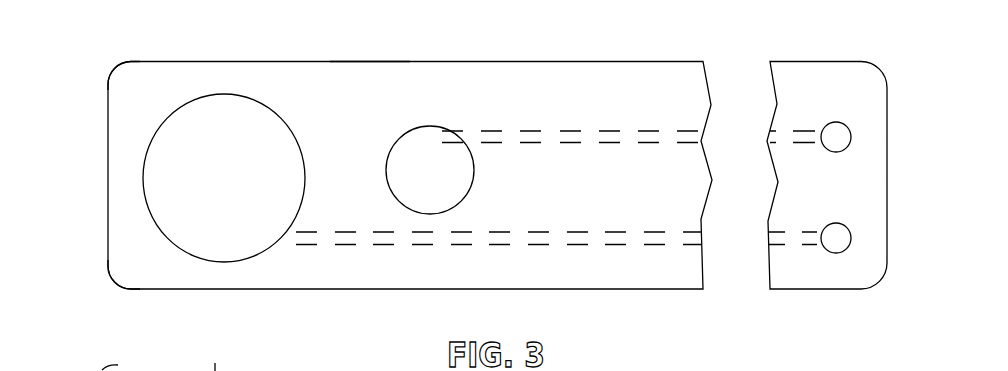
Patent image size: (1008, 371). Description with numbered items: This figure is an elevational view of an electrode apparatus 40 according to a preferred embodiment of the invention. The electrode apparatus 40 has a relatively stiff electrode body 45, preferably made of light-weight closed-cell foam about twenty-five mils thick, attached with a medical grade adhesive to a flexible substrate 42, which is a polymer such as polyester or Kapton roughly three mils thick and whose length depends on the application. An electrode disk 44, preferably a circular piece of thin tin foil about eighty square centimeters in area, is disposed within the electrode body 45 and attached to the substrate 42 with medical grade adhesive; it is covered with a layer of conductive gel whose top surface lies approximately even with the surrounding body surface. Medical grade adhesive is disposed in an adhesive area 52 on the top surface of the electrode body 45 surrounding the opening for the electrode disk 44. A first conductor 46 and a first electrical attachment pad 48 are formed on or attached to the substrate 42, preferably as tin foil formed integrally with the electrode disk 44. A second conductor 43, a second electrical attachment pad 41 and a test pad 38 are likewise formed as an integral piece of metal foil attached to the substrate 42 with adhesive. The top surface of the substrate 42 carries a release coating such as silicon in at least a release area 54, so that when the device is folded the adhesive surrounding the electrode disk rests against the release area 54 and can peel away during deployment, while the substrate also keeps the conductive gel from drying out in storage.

The electrode apparatus 40 is at (463, 173).
The flexible substrate 42 is at (566, 78).
The electrode body 45 is at (143, 92).
The adhesive area 52 is at (124, 246).
The release area 54 is at (370, 88).
The electrode disk 44 is at (170, 166).
The test pad 38 is at (433, 138).
The second conductor 43 is at (645, 130).
The first conductor 46 is at (615, 238).
The second electrical attachment pad 41 is at (836, 122).
The first electrical attachment pad 48 is at (836, 253).